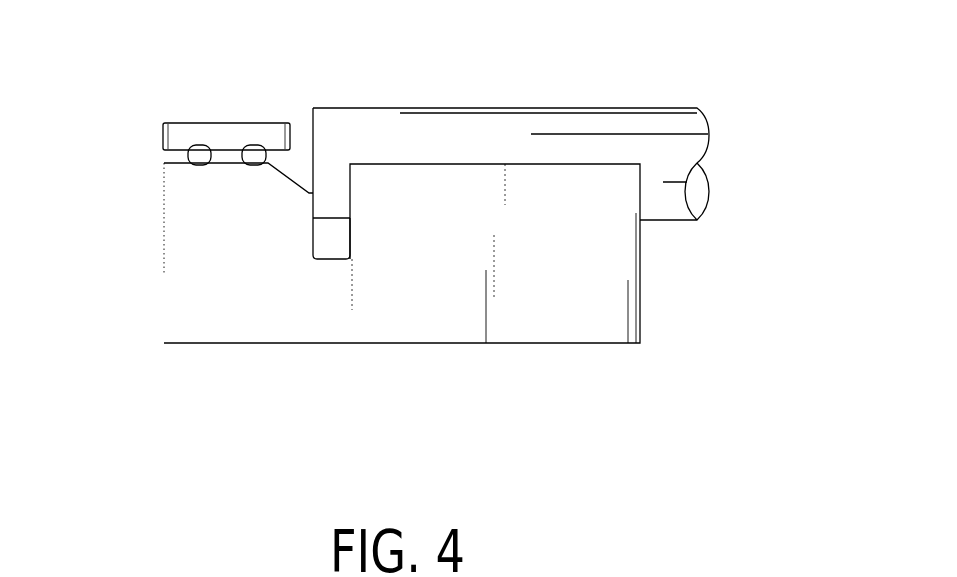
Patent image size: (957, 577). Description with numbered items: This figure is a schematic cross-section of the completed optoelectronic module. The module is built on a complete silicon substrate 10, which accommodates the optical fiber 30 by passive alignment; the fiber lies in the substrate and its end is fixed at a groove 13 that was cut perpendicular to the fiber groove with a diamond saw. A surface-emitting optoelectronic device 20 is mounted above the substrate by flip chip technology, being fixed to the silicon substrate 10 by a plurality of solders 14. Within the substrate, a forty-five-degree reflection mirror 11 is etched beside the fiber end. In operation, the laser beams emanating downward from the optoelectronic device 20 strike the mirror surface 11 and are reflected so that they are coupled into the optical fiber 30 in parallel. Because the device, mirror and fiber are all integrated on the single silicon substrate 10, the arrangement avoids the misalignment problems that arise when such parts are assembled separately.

The silicon substrate 10 is at (684, 355).
The 45-degree reflection mirror 11 is at (293, 168).
The groove 13 is at (327, 244).
The solders 14 is at (194, 156).
The optoelectronic device 20 is at (218, 123).
The optical fiber 30 is at (560, 123).